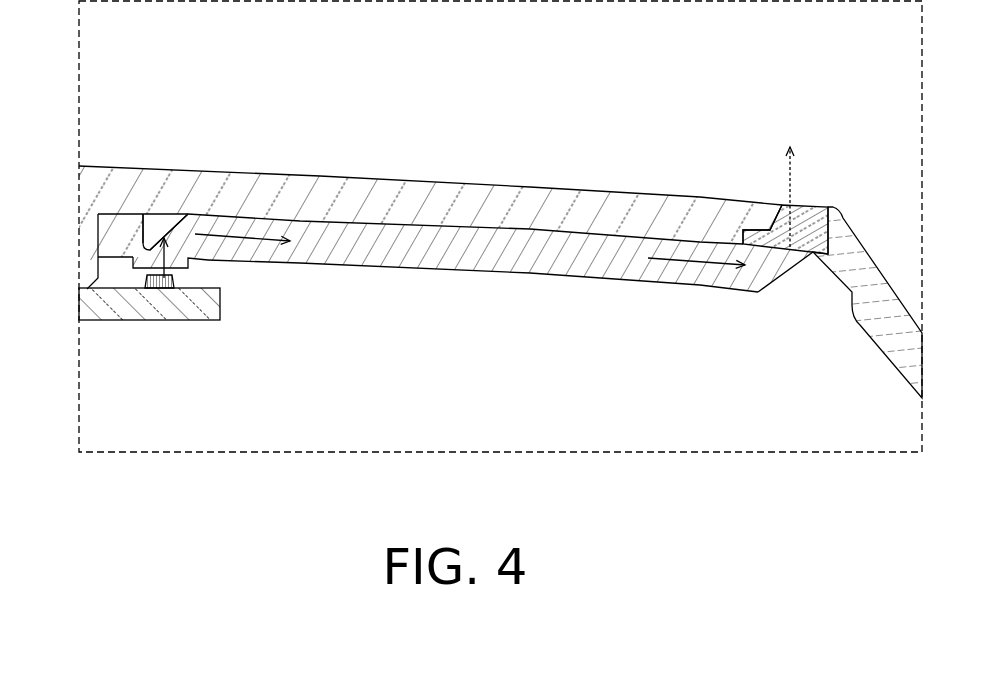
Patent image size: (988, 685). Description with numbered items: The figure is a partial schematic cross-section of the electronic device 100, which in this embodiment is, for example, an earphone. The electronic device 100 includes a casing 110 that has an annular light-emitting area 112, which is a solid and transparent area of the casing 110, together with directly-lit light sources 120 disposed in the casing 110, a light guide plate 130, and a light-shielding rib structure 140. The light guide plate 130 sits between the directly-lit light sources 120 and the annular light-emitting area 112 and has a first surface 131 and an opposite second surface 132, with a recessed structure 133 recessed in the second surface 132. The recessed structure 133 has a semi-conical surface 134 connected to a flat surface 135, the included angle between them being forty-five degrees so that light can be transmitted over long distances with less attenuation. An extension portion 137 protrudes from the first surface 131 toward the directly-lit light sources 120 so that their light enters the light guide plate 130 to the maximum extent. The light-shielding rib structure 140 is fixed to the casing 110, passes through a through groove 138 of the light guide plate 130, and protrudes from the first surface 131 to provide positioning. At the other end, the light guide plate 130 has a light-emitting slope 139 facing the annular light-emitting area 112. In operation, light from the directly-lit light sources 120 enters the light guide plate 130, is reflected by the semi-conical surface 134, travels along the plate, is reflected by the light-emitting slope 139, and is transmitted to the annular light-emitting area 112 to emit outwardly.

The electronic device 100 is at (750, 73).
The casing 110 is at (872, 293).
The annular light-emitting area 112 is at (808, 213).
The directly-lit light source 120 is at (160, 289).
The light guide plate 130 is at (446, 215).
The first surface 131 is at (352, 265).
The second surface 132 is at (340, 221).
The recessed structure 133 is at (232, 70).
The semi-conical surface 134 is at (170, 230).
The flat surface 135 is at (143, 228).
The extension portion 137 is at (192, 262).
The through groove 138 is at (100, 231).
The light-emitting slope 139 is at (784, 259).
The light-shielding rib structure 140 is at (100, 268).